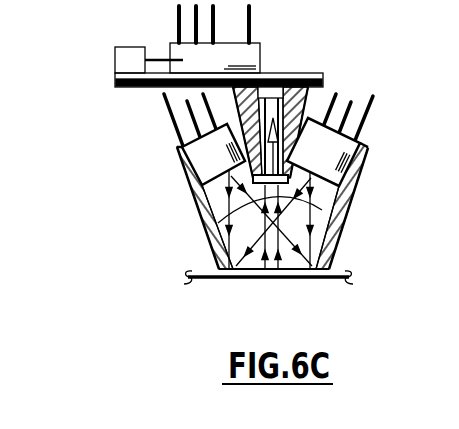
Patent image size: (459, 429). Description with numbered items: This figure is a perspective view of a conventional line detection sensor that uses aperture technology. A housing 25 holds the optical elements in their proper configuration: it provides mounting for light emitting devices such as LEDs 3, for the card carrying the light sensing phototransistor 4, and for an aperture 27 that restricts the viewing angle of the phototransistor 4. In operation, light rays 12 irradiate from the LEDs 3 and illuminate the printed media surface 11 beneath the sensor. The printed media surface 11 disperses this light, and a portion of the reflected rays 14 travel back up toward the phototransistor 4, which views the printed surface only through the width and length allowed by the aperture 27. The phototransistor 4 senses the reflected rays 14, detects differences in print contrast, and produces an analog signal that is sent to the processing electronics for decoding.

The phototransistor 4 is at (295, 78).
The LED 3 is at (363, 153).
The reflected rays 14 is at (200, 217).
The housing 25 is at (182, 193).
The light rays 12 is at (338, 227).
The aperture 27 is at (333, 210).
The printed media surface 11 is at (230, 279).